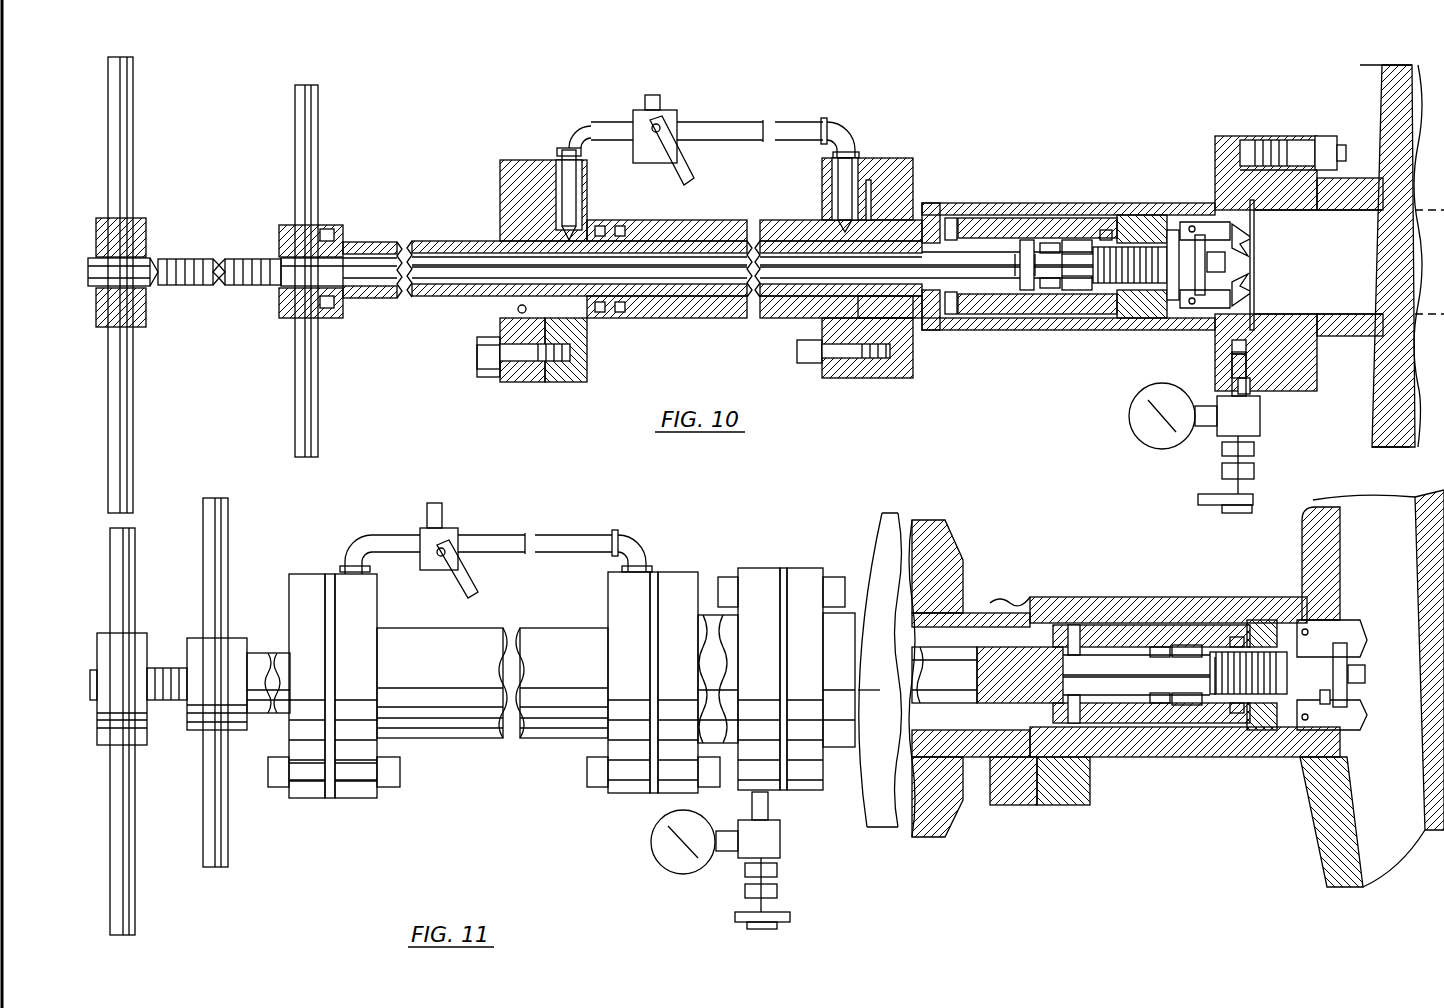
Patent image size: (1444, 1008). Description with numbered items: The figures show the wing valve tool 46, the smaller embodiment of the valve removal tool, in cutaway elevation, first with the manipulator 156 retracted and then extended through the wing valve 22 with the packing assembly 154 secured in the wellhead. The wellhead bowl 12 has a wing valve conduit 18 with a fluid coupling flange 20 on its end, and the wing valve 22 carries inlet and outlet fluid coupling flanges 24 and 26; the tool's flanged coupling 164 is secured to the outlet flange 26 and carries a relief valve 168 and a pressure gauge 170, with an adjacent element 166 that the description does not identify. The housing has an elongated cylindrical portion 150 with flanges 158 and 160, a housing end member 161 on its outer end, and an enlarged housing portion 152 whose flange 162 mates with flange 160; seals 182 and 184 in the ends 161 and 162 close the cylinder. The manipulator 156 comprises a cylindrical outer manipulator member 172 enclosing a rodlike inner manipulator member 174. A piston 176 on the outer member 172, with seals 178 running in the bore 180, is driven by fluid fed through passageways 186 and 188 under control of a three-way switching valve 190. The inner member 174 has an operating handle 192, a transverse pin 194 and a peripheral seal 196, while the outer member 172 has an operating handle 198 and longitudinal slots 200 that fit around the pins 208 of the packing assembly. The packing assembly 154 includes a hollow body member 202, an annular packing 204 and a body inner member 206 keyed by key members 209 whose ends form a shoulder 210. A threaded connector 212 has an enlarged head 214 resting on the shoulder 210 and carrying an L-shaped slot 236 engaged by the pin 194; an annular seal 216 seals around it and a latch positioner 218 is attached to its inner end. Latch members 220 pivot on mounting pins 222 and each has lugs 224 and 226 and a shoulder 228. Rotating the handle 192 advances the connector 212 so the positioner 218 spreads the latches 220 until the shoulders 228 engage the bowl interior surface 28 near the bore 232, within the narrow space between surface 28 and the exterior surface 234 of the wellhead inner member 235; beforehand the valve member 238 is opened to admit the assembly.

In FIG. 11, the bowl 12 is at (1360, 886).
In FIG. 11, the wing valve conduit 18 is at (1100, 775).
In FIG. 11, the fluid coupling flange 20 is at (1068, 806).
In FIG. 10, the wing valve 22 is at (1392, 405).
In FIG. 11, the wing valve 22 is at (885, 520).
In FIG. 11, the fluid coupling flange 24 is at (1017, 806).
In FIG. 10, the fluid coupling flange 26 is at (1280, 140).
In FIG. 11, the fluid coupling flange 26 is at (800, 590).
In FIG. 11, the interior surface 28 is at (1443, 818).
In FIG. 10, the wing valve tool 46 is at (958, 140).
In FIG. 11, the wing valve tool 46 is at (583, 497).
In FIG. 10, the cylindrical housing portion 150 is at (650, 302).
In FIG. 11, the cylindrical housing portion 150 is at (485, 732).
In FIG. 10, the enlarged housing portion 152 is at (1028, 225).
In FIG. 11, the enlarged housing portion 152 is at (712, 615).
In FIG. 10, the packing assembly 154 is at (1275, 255).
In FIG. 10, the manipulator 156 is at (484, 214).
In FIG. 10, the flange 158 is at (565, 375).
In FIG. 11, the flange 158 is at (355, 800).
In FIG. 10, the flange 160 is at (835, 375).
In FIG. 11, the flange 160 is at (620, 795).
In FIG. 10, the housing end member 161 is at (520, 378).
In FIG. 11, the housing end member 161 is at (310, 800).
In FIG. 10, the flange 162 is at (880, 375).
In FIG. 11, the flange 162 is at (668, 795).
In FIG. 10, the flanged coupling 164 is at (1215, 142).
In FIG. 11, the flanged coupling 164 is at (758, 590).
In FIG. 10, the fitting 166 is at (1252, 388).
In FIG. 10, the relief valve 168 is at (1220, 425).
In FIG. 11, the relief valve 168 is at (778, 838).
In FIG. 10, the pressure gauge 170 is at (1145, 428).
In FIG. 11, the pressure gauge 170 is at (665, 862).
In FIG. 10, the outer manipulator member 172 is at (370, 243).
In FIG. 11, the outer manipulator member 172 is at (258, 660).
In FIG. 10, the inner manipulator member 174 is at (178, 262).
In FIG. 11, the inner manipulator member 174 is at (165, 672).
In FIG. 10, the piston 176 is at (595, 320).
In FIG. 10, the seals 178 is at (610, 225).
In FIG. 10, the bore 180 is at (710, 228).
In FIG. 10, the seal 182 is at (518, 310).
In FIG. 10, the seal 184 is at (868, 200).
In FIG. 10, the passageway 186 is at (565, 175).
In FIG. 11, the passageway 186 is at (380, 554).
In FIG. 10, the passageway 188 is at (838, 180).
In FIG. 11, the passageway 188 is at (635, 553).
In FIG. 10, the switching valve 190 is at (665, 115).
In FIG. 11, the switching valve 190 is at (450, 528).
In FIG. 10, the operating handle 192 is at (122, 140).
In FIG. 11, the operating handle 192 is at (128, 560).
In FIG. 10, the pin 194 is at (1050, 238).
In FIG. 11, the pin 194 is at (1165, 652).
In FIG. 10, the peripheral seal 196 is at (345, 300).
In FIG. 10, the operating handle 198 is at (310, 115).
In FIG. 11, the operating handle 198 is at (222, 520).
In FIG. 10, the slots 200 is at (975, 205).
In FIG. 11, the slots 200 is at (1130, 742).
In FIG. 10, the body member 202 is at (1060, 225).
In FIG. 11, the body member 202 is at (1185, 630).
In FIG. 10, the annular packing 204 is at (1112, 232).
In FIG. 11, the annular packing 204 is at (1240, 637).
In FIG. 10, the body inner member 206 is at (1130, 222).
In FIG. 11, the body inner member 206 is at (1262, 730).
In FIG. 10, the pins 208 is at (948, 215).
In FIG. 11, the pins 208 is at (1072, 628).
In FIG. 10, the key members 209 is at (1078, 238).
In FIG. 11, the key members 209 is at (1190, 645).
In FIG. 10, the shoulder 210 is at (1037, 300).
In FIG. 11, the shoulder 210 is at (1213, 700).
In FIG. 10, the threaded connector 212 is at (1065, 285).
In FIG. 10, the enlarged head 214 is at (1035, 240).
In FIG. 10, the annular seal 216 is at (1110, 285).
In FIG. 11, the annular seal 216 is at (1265, 700).
In FIG. 10, the latch positioner 218 is at (1255, 276).
In FIG. 11, the latch positioner 218 is at (1345, 695).
In FIG. 10, the latch members 220 is at (1252, 233).
In FIG. 11, the latch members 220 is at (1325, 702).
In FIG. 10, the mounting pins 222 is at (1236, 330).
In FIG. 11, the mounting pins 222 is at (1340, 520).
In FIG. 10, the lug 224 is at (1170, 300).
In FIG. 11, the lug 224 is at (1322, 645).
In FIG. 10, the lug 226 is at (1220, 264).
In FIG. 11, the lug 226 is at (1308, 640).
In FIG. 10, the shoulder 228 is at (1232, 360).
In FIG. 11, the shoulder 228 is at (1325, 762).
In FIG. 11, the bore 232 is at (1060, 650).
In FIG. 11, the exterior surface 234 is at (1345, 805).
In FIG. 11, the wellhead inner member 235 is at (1443, 837).
In FIG. 10, the L-shaped slot 236 is at (1018, 300).
In FIG. 10, the valve member 238 is at (1398, 120).